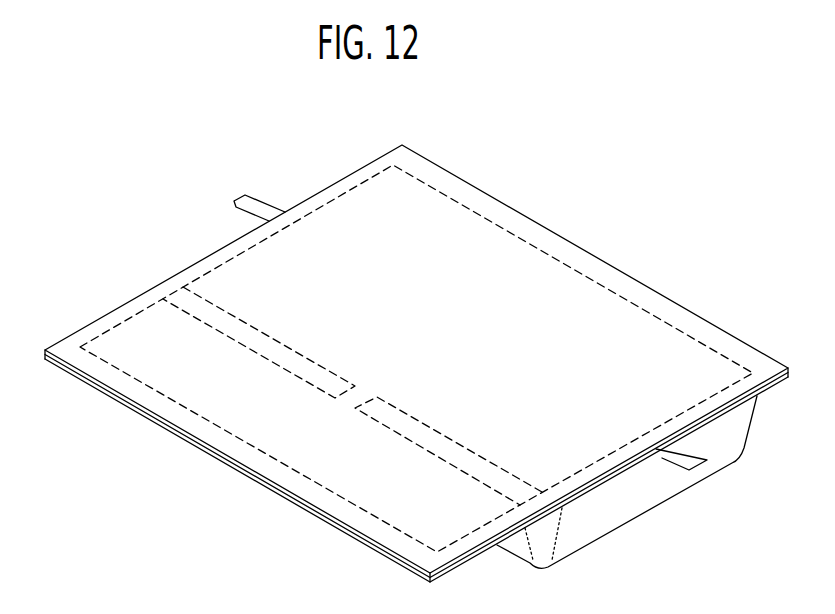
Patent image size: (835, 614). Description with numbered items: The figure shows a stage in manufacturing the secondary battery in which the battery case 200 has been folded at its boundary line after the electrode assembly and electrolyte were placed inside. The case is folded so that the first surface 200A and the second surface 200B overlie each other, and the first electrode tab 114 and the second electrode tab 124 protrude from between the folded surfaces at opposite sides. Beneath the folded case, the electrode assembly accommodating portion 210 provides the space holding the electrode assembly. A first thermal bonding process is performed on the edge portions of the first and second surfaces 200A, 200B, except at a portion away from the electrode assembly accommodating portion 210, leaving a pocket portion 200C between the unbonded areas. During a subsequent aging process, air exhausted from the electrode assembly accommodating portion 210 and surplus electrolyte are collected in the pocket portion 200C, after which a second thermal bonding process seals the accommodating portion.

The battery case 200 is at (177, 175).
The first surface 200A is at (118, 403).
The second surface 200B is at (137, 313).
The pocket portion 200C is at (337, 489).
The first electrode tab 114 is at (250, 202).
The second electrode tab 124 is at (690, 460).
The electrode assembly accommodating portion 210 is at (590, 522).